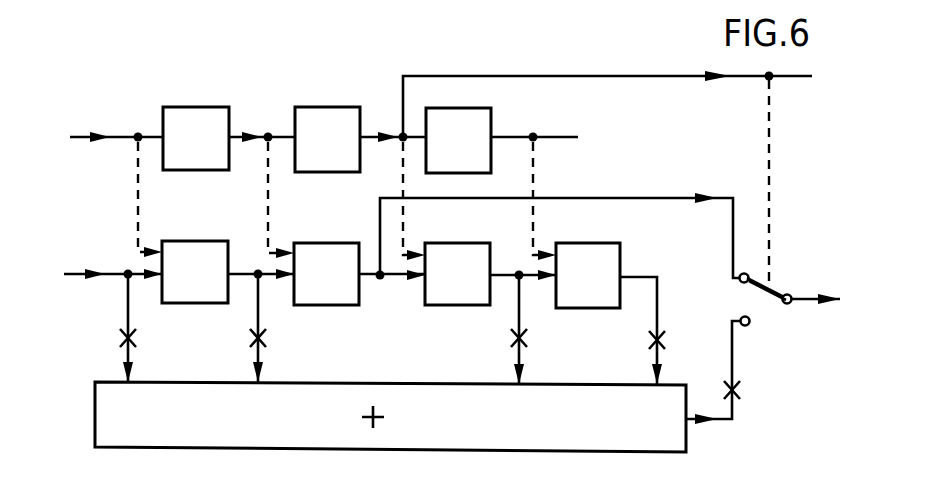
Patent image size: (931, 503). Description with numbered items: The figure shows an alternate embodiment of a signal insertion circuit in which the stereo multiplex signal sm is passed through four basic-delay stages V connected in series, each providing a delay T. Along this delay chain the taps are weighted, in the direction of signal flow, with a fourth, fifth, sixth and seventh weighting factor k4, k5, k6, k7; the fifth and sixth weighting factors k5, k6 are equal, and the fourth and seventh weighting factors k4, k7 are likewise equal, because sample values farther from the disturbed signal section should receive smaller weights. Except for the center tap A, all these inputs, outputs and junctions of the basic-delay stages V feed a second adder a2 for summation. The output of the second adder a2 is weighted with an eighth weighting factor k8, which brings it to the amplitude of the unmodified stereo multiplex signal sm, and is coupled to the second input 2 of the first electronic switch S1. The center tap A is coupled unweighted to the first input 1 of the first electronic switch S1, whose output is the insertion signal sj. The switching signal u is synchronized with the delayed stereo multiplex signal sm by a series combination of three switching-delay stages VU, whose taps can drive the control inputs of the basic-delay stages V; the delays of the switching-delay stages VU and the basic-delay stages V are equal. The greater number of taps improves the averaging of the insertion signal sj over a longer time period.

The switching signal u is at (106, 138).
The stereo multiplex signal sm is at (94, 275).
The switching-delay stage VU is at (190, 107).
The basic-delay stage V is at (197, 241).
The center tap A is at (556, 251).
The fourth weighting factor k4 is at (112, 330).
The fifth weighting factor k5 is at (242, 330).
The sixth weighting factor k6 is at (503, 331).
The seventh weighting factor k7 is at (639, 330).
The eighth weighting factor k8 is at (729, 372).
The second adder a2 is at (607, 452).
The first electronic switch S1 is at (772, 292).
The first input of the first electronic switch 1 is at (732, 280).
The second input of the first electronic switch 2 is at (731, 324).
The insertion signal sj is at (831, 300).